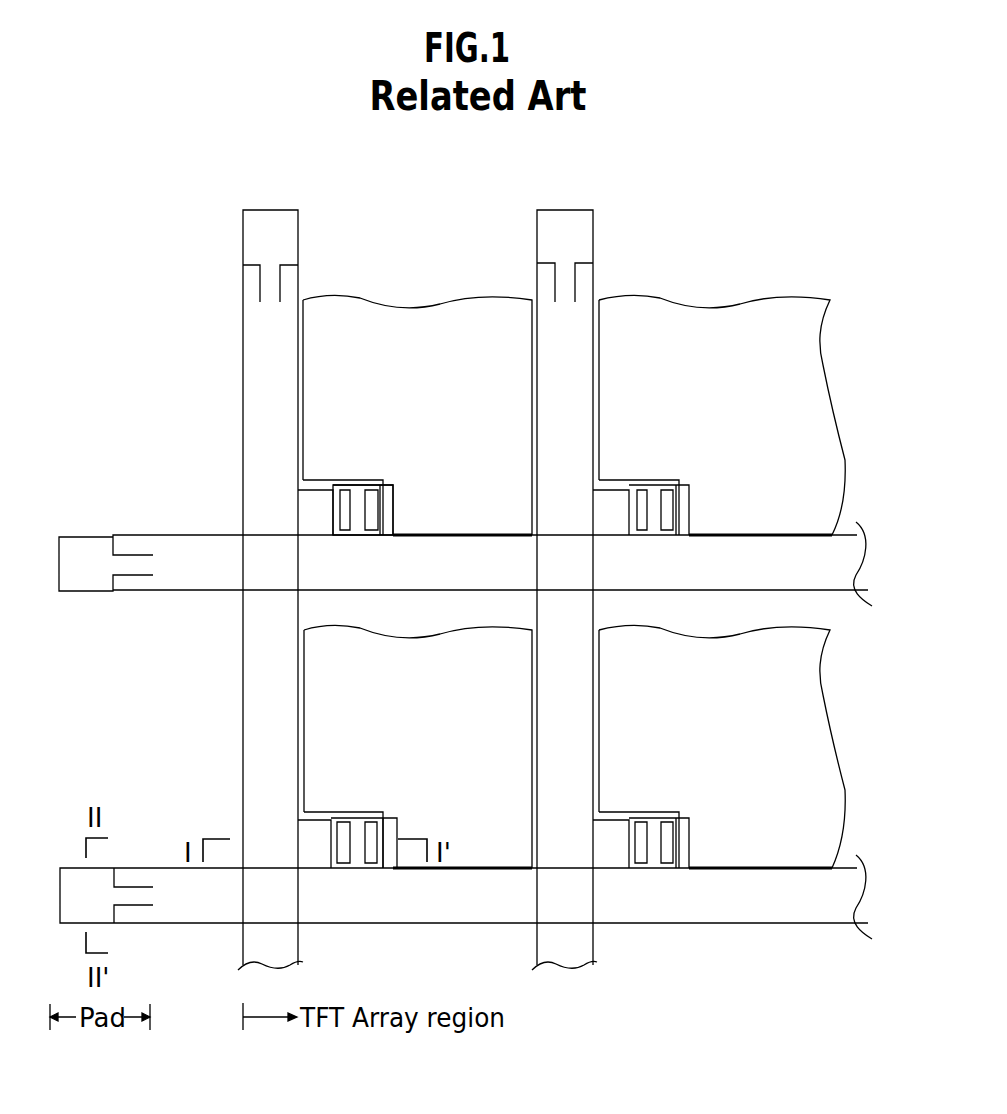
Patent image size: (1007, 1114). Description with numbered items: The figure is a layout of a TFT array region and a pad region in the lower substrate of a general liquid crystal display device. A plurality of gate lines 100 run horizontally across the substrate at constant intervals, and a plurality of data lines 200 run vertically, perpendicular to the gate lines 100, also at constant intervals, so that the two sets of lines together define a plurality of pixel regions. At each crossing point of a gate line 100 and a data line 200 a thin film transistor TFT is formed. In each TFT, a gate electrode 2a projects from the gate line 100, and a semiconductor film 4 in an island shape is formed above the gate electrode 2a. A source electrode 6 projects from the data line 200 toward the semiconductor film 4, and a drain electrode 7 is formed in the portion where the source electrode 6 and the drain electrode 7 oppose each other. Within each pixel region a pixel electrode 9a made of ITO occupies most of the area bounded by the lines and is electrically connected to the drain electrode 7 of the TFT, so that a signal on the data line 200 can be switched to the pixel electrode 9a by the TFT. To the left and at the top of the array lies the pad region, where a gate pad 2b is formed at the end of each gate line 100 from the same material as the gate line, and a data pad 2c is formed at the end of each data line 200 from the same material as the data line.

The data line 200 is at (253, 370).
The data pad 2c is at (268, 228).
The gate line 100 is at (204, 546).
The gate pad 2b is at (87, 549).
The pixel electrode 9a is at (452, 297).
The gate electrode 2a is at (353, 482).
The thin film transistor TFT is at (392, 478).
The source electrode 6 is at (352, 515).
The drain electrode 7 is at (397, 526).
The semiconductor film 4 is at (386, 501).